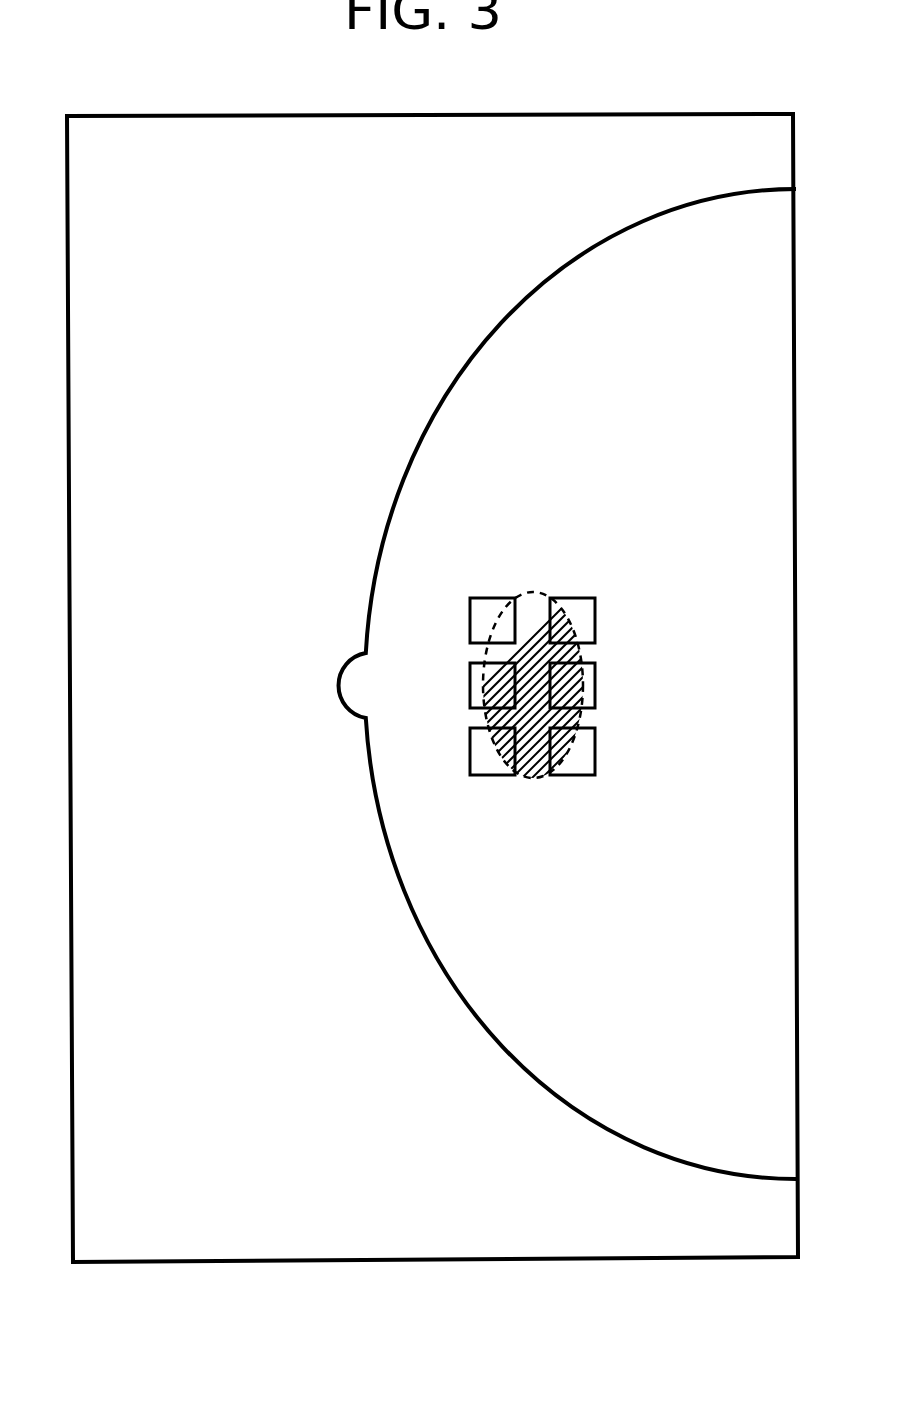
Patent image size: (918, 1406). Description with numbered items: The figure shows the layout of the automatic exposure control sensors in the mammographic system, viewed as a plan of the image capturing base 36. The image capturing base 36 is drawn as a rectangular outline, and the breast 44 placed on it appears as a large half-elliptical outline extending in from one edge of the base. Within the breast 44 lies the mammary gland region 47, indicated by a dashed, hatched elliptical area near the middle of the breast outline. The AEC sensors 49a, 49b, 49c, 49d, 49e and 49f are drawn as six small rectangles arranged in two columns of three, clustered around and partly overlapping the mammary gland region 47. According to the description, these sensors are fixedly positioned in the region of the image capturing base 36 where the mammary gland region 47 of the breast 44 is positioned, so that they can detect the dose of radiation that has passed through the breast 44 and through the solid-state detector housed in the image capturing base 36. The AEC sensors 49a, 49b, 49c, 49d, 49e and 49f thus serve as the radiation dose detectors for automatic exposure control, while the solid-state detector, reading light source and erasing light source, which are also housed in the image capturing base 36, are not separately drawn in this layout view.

The image capturing base 36 is at (163, 1168).
The breast 44 is at (636, 335).
The mammary gland region 47 is at (538, 780).
The AEC sensor 49a is at (572, 608).
The AEC sensor 49b is at (597, 682).
The AEC sensor 49c is at (578, 768).
The AEC sensor 49d is at (492, 608).
The AEC sensor 49e is at (470, 682).
The AEC sensor 49f is at (480, 768).